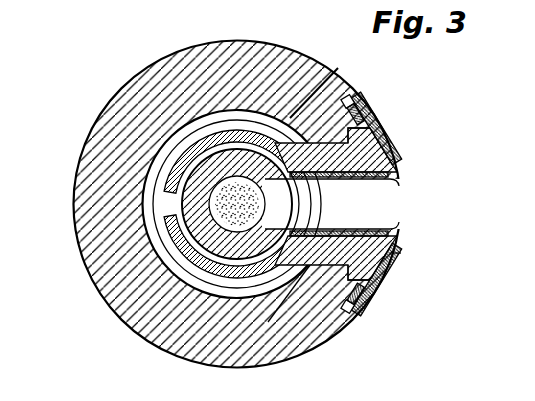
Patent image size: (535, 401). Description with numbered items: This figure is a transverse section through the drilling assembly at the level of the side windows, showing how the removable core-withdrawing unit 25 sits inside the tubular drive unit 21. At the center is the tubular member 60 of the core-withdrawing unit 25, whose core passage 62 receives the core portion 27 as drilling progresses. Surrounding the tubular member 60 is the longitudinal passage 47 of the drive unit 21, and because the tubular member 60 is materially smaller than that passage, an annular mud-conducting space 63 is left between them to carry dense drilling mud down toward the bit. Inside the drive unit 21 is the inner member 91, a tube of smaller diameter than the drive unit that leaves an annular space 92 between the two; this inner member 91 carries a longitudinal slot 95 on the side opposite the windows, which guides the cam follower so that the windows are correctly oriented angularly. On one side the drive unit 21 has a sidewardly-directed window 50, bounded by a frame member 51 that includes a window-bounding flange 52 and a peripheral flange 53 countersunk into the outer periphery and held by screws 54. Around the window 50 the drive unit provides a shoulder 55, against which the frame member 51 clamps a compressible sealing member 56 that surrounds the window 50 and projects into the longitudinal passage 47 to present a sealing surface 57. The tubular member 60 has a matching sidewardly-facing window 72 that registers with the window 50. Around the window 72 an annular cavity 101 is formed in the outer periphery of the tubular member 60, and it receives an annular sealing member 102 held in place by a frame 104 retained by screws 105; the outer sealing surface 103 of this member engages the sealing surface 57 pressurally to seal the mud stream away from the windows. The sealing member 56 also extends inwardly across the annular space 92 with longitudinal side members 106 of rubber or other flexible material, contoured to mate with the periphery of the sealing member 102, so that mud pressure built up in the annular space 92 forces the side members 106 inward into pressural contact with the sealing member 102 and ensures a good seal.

The tubular drive unit 21 is at (97, 118).
The core-withdrawing unit 25 is at (200, 148).
The core portion 27 is at (157, 208).
The longitudinal passage 47 is at (276, 283).
The window 50 is at (402, 180).
The frame member 51 is at (399, 253).
The window-bounding flange 52 is at (378, 225).
The peripheral flange 53 is at (380, 126).
The screws 54 is at (363, 108).
The shoulder 55 is at (378, 278).
The sealing member 56 is at (387, 150).
The sealing surface 57 is at (247, 265).
The tubular member 60 is at (115, 275).
The core passage 62 is at (262, 188).
The annular mud-conducting space 63 is at (163, 163).
The window 72 is at (265, 227).
The inner member 91 is at (187, 237).
The annular space 92 is at (224, 117).
The longitudinal slot 95 is at (146, 203).
The annular cavity 101 is at (247, 140).
The annular sealing member 102 is at (275, 128).
The outer sealing surface 103 is at (305, 138).
The frame 104 is at (138, 300).
The screws 105 is at (205, 298).
The longitudinal side members 106 is at (340, 97).